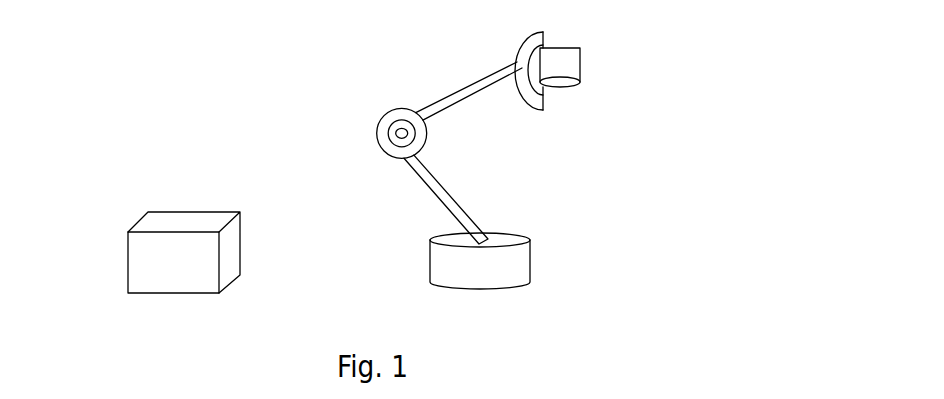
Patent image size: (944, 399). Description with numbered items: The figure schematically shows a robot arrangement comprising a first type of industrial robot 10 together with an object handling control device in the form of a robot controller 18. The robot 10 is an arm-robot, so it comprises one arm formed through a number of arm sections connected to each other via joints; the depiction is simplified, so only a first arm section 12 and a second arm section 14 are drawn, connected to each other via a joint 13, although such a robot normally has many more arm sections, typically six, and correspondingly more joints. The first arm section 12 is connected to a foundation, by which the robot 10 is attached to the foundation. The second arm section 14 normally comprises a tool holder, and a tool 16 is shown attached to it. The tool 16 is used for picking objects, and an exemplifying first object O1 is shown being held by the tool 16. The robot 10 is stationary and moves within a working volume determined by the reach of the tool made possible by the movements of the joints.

The industrial robot 10 is at (539, 144).
The first arm section 12 is at (433, 178).
The joint 13 is at (382, 124).
The second arm section 14 is at (467, 87).
The tool 16 is at (543, 33).
The robot controller 18 is at (132, 233).
The first object O1 is at (577, 68).